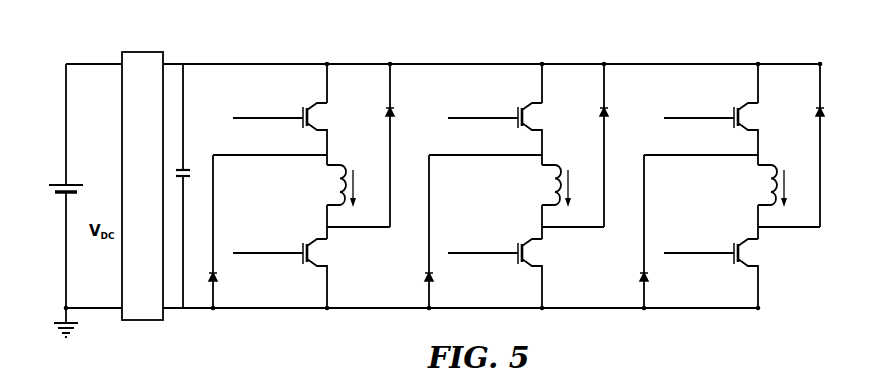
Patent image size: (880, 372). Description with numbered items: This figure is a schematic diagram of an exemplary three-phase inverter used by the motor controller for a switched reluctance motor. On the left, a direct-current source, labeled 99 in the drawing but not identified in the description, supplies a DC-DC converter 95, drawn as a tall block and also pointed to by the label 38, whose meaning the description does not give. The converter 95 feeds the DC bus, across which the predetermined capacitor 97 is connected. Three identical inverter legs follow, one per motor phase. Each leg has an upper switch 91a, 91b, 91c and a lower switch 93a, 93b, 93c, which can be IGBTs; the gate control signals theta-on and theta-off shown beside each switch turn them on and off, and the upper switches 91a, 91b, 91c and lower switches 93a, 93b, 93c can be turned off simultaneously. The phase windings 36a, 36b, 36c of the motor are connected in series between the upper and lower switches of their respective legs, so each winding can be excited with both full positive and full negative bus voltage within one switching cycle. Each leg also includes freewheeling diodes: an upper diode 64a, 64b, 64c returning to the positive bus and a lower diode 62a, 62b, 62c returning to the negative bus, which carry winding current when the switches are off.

The motor drive circuit 38 is at (150, 40).
The DC-DC converter 95 is at (147, 313).
The capacitor 97 is at (188, 168).
The DC power source (battery) 99 is at (57, 193).
The upper switch 91a is at (303, 111).
The upper switch 91b is at (518, 111).
The upper switch 91c is at (734, 111).
The lower switch 93a is at (303, 247).
The lower switch 93b is at (518, 247).
The lower switch 93c is at (734, 247).
The phase winding 36a is at (340, 166).
The phase winding 36b is at (555, 166).
The phase winding 36c is at (771, 166).
The freewheeling diode 62a is at (215, 279).
The freewheeling diode 62b is at (427, 278).
The freewheeling diode 62c is at (642, 278).
The freewheeling diode 64a is at (393, 112).
The freewheeling diode 64b is at (608, 112).
The freewheeling diode 64c is at (823, 112).